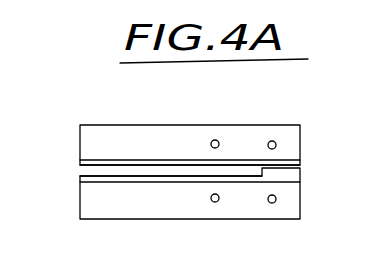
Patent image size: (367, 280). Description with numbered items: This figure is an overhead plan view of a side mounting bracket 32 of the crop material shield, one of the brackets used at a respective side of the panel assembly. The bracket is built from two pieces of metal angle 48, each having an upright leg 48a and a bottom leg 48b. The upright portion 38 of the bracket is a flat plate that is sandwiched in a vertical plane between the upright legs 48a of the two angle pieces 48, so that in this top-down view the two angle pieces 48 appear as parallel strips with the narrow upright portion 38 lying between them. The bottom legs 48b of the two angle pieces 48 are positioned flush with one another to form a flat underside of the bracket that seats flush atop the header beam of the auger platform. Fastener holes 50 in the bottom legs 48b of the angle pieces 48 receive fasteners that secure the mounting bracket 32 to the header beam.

The side mounting bracket 32 is at (70, 125).
The upright portion 38 is at (244, 172).
The metal angle 48 is at (188, 143).
The upright leg 48a is at (109, 164).
The bottom leg 48b is at (160, 148).
The fastener holes 50 is at (216, 138).